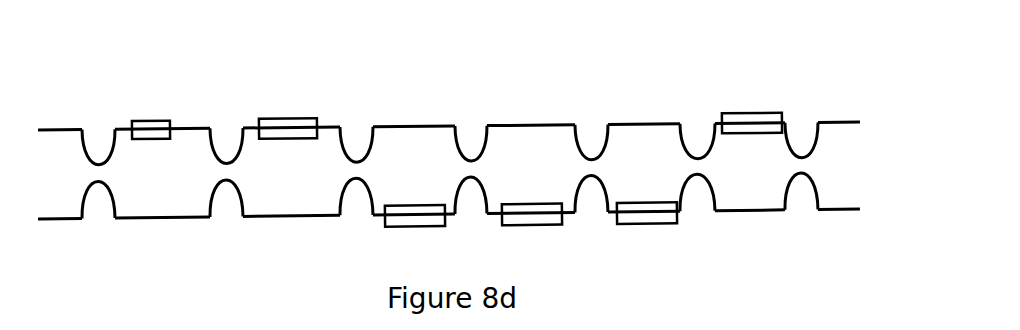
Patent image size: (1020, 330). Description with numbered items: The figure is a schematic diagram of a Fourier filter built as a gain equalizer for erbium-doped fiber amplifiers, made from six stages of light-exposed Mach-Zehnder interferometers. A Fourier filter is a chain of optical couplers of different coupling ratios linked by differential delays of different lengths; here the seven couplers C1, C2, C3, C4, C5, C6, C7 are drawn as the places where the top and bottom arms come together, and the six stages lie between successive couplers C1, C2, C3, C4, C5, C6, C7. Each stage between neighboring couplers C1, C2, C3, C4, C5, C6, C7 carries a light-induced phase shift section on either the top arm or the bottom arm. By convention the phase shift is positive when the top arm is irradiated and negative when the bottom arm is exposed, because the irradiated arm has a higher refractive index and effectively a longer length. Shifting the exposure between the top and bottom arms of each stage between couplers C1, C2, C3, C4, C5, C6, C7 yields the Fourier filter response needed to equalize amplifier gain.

The grating section C1 is at (99, 157).
The grating section C2 is at (225, 157).
The grating section C3 is at (355, 154).
The grating section C4 is at (469, 154).
The grating section C5 is at (589, 152).
The grating section C6 is at (696, 149).
The grating section C7 is at (800, 149).